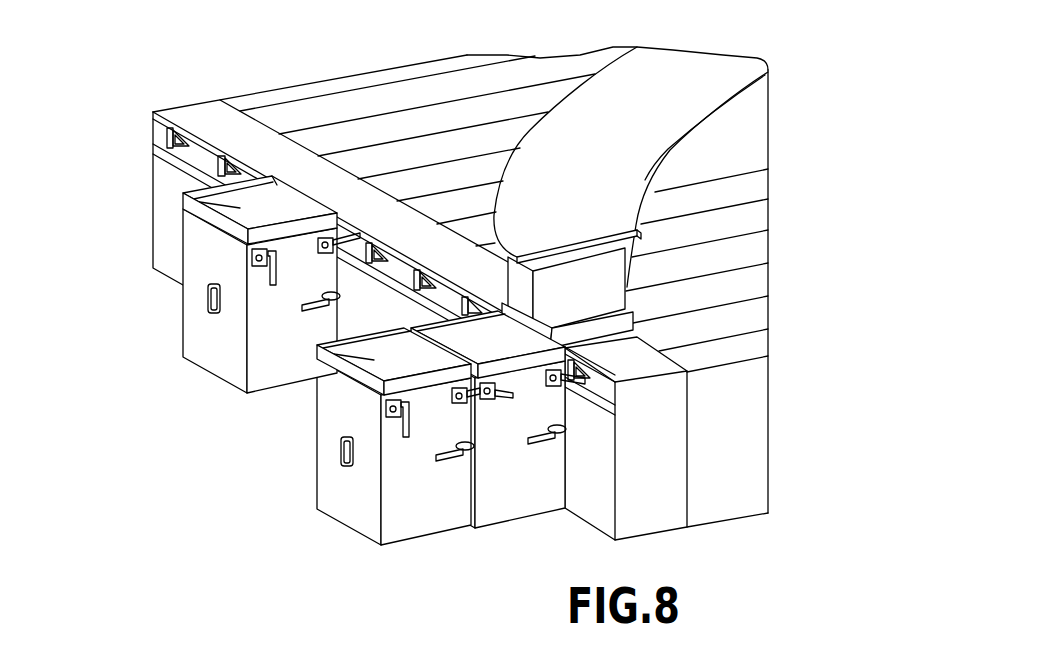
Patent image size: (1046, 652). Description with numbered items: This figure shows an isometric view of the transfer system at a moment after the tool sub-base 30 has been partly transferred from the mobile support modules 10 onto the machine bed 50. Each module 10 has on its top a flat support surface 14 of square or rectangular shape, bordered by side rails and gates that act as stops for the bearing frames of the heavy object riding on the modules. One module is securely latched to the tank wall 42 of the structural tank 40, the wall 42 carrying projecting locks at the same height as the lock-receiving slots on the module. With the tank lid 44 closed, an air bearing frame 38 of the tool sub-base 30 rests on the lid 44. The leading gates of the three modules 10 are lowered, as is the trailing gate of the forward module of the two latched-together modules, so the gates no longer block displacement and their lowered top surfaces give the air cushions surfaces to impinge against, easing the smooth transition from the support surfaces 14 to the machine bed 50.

The mobile support module 10 is at (348, 357).
The support surface 14 is at (164, 196).
The tool sub-base 30 is at (730, 128).
The air bearing frame 38 is at (640, 316).
The structural tank 40 is at (425, 277).
The tank wall 42 is at (162, 192).
The tank lid 44 is at (162, 98).
The machine bed 50 is at (393, 70).